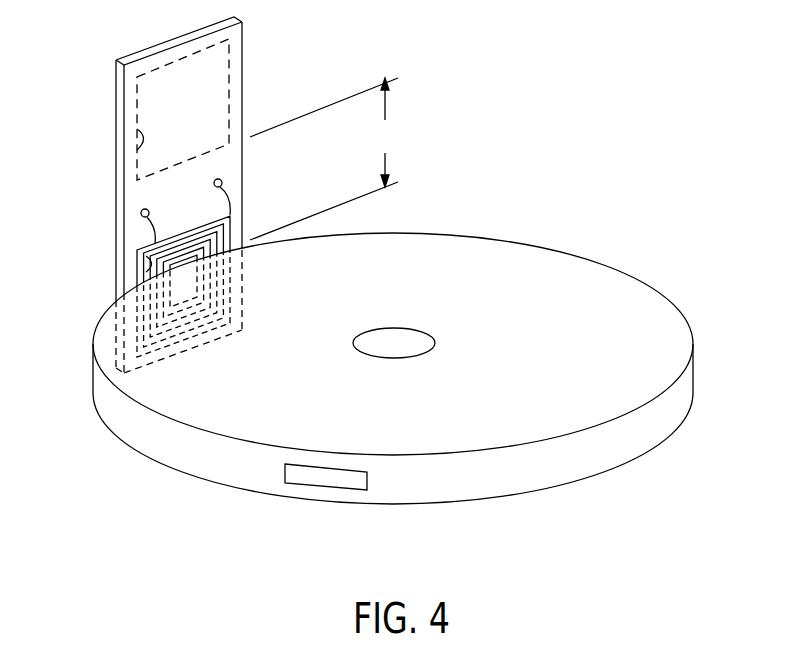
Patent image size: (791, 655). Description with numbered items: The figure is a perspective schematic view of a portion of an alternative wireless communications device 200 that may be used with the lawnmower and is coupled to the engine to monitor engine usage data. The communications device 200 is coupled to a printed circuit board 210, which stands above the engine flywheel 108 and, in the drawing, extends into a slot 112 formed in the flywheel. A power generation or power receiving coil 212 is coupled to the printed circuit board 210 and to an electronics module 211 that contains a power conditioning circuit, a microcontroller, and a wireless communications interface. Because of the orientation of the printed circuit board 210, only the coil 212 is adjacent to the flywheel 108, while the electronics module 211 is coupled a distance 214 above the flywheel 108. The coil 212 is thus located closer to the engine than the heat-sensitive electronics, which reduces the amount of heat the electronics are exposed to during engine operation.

The flywheel 108 is at (628, 292).
The slot / opening on side of base 112 is at (328, 480).
The wireless communications device 200 is at (243, 70).
The printed circuit board 210 is at (231, 162).
The electronics module 211 is at (137, 152).
The power receiving coil 212 is at (138, 283).
The distance 214 is at (325, 159).